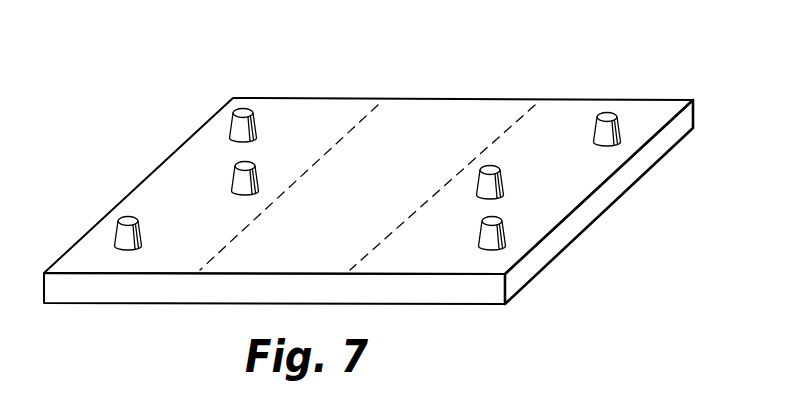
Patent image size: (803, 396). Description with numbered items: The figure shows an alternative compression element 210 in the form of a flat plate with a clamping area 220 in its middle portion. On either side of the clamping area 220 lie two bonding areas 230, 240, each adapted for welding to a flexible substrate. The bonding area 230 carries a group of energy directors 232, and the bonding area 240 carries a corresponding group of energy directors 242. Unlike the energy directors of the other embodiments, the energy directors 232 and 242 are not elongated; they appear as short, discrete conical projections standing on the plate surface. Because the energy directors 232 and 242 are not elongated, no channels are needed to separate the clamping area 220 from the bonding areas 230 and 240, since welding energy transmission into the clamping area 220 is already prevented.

The compression element 210 is at (379, 160).
The clamping area 220 is at (390, 191).
The bonding area 230 is at (328, 108).
The bonding area 240 is at (562, 110).
The energy directors 232 is at (231, 182).
The energy directors 242 is at (504, 193).